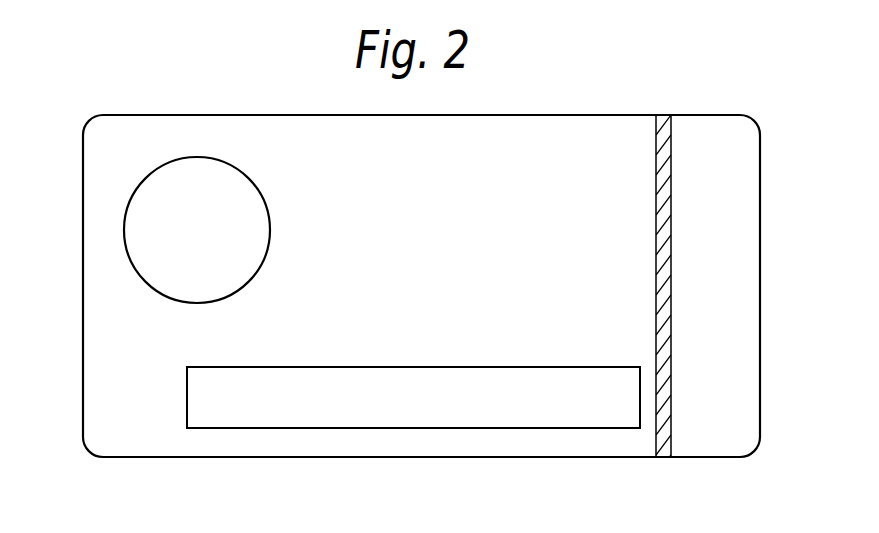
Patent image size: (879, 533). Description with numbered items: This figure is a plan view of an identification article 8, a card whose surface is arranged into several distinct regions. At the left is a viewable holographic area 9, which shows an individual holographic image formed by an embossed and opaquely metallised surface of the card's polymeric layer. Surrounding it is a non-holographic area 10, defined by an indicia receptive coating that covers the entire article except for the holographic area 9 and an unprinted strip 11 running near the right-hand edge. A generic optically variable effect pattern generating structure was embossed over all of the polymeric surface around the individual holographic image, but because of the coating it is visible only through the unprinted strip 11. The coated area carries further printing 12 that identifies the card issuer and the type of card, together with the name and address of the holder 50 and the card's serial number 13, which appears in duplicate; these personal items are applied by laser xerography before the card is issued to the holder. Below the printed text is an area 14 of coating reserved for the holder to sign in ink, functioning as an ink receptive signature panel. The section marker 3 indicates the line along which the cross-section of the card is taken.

The section line 3- 3 is at (65, 225).
The identification article 8 is at (716, 107).
The viewable holographic area 9 is at (245, 205).
The non-holographic area 10 is at (108, 392).
The unprinted strip 11 is at (665, 420).
The printing 12 is at (574, 205).
The serial number 13 is at (120, 328).
The signature panel area 14 is at (373, 428).
The name and address of the holder 50 is at (573, 288).